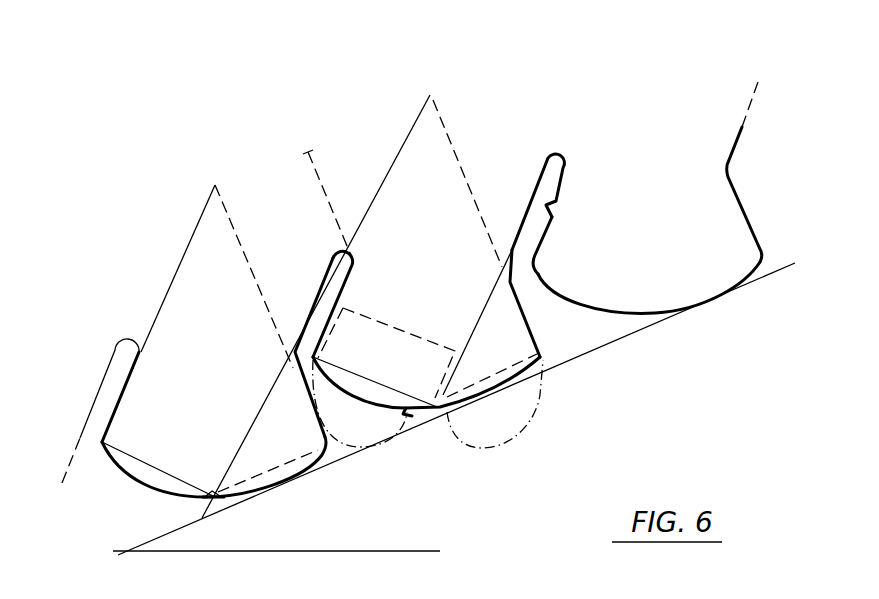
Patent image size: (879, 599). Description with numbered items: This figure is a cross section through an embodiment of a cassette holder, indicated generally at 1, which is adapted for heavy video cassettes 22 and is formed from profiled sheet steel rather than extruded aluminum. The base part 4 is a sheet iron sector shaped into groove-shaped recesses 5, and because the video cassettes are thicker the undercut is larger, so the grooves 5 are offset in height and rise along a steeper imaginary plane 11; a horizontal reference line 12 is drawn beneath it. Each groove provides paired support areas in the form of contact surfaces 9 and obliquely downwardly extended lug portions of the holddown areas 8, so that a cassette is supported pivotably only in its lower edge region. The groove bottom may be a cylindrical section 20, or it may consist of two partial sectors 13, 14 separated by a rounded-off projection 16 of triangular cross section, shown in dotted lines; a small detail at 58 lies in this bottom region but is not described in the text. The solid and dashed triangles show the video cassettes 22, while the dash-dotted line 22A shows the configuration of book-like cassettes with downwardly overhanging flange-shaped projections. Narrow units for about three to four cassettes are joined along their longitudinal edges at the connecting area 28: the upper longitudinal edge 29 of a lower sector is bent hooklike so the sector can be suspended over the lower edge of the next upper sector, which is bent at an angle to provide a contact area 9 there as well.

The forming apparatus 1 is at (675, 78).
The base part 4 is at (133, 478).
The groove-shaped recess 5 is at (652, 239).
The holddown area 8 is at (347, 278).
The contact area 9 is at (355, 255).
The imaginary plane 11 is at (607, 347).
The horizontal reference line 12 is at (352, 548).
The partial sector 13 is at (147, 480).
The partial sector 14 is at (287, 483).
The rounded-off projection 16 is at (217, 501).
The cylindrical section 20 is at (515, 378).
The video cassette 22 is at (193, 230).
The dash-dotted line 22A is at (392, 335).
The connecting area 28 is at (549, 149).
The upper longitudinal edge 29 is at (555, 200).
The seam protrusion 58 is at (407, 413).